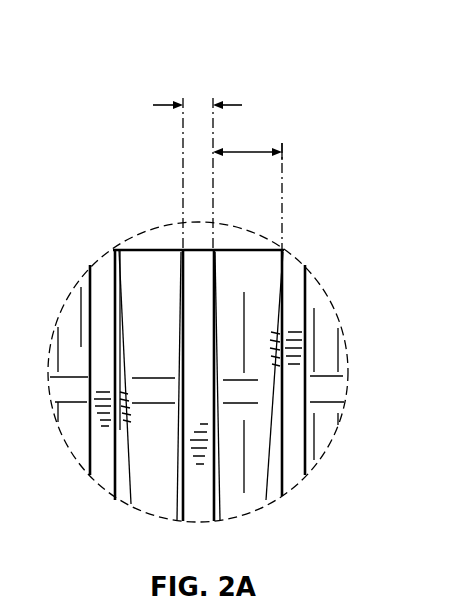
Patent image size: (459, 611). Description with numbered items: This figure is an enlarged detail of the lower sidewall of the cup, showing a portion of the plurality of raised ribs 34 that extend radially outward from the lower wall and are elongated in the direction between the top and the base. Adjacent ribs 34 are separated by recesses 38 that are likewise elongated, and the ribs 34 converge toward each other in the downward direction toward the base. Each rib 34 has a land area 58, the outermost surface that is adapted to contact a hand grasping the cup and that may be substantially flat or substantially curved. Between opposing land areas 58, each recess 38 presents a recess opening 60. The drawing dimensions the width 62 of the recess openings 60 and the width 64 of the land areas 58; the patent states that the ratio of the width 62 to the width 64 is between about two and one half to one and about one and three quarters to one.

The raised ribs 34 is at (307, 298).
The recesses 38 is at (140, 274).
The land areas 58 is at (102, 447).
The recess openings 60 is at (265, 150).
The width of the recess openings 62 is at (241, 151).
The width of the land areas 64 is at (228, 104).